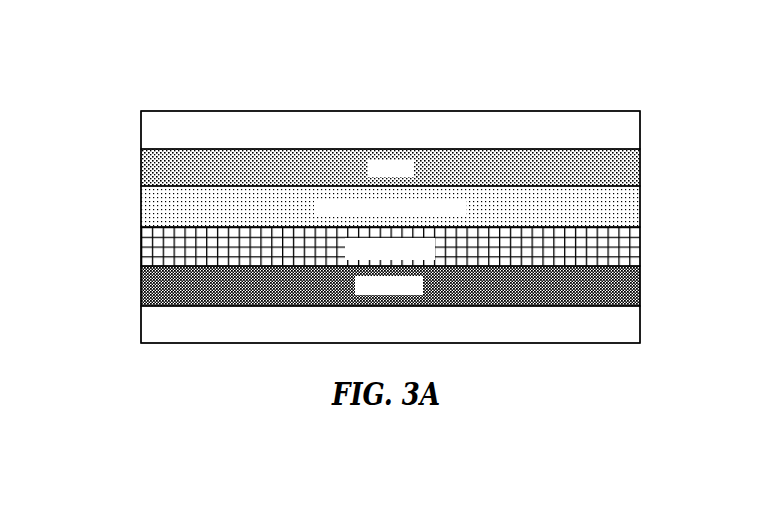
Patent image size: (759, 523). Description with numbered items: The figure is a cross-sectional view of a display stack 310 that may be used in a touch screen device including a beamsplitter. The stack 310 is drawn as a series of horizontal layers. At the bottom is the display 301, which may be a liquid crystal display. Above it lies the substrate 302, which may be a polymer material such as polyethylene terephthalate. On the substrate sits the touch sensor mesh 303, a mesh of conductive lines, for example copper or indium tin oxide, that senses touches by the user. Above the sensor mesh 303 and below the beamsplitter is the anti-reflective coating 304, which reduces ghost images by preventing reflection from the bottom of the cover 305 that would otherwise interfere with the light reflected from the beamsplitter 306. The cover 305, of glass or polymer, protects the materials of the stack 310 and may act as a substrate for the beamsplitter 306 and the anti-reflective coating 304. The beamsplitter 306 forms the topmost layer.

The display stack 310 is at (390, 90).
The beamsplitter 306 is at (138, 129).
The cover 305 is at (642, 167).
The anti-reflective coating 304 is at (138, 207).
The touch sensor mesh 303 is at (642, 245).
The substrate 302 is at (138, 284).
The display 301 is at (642, 325).